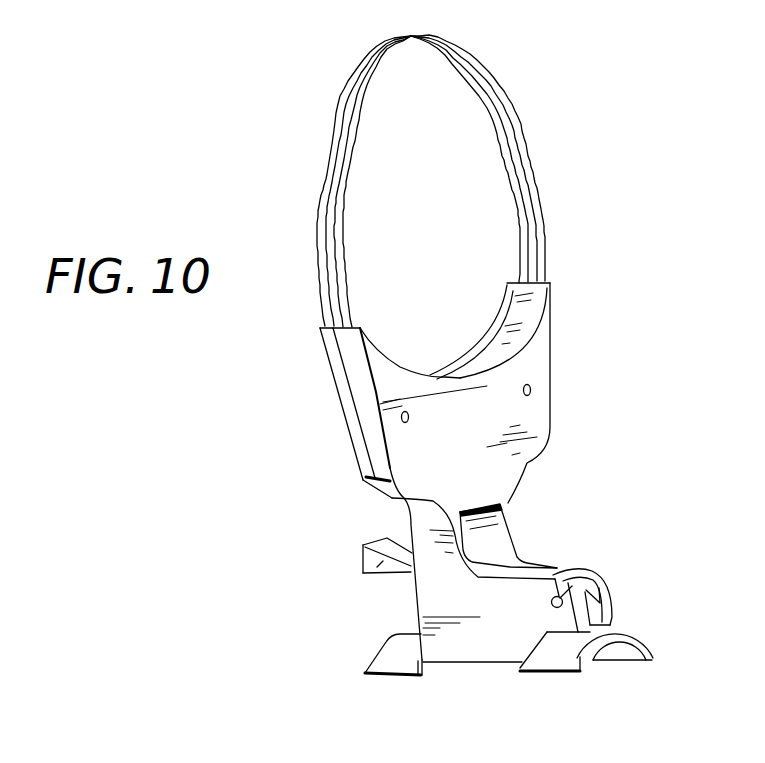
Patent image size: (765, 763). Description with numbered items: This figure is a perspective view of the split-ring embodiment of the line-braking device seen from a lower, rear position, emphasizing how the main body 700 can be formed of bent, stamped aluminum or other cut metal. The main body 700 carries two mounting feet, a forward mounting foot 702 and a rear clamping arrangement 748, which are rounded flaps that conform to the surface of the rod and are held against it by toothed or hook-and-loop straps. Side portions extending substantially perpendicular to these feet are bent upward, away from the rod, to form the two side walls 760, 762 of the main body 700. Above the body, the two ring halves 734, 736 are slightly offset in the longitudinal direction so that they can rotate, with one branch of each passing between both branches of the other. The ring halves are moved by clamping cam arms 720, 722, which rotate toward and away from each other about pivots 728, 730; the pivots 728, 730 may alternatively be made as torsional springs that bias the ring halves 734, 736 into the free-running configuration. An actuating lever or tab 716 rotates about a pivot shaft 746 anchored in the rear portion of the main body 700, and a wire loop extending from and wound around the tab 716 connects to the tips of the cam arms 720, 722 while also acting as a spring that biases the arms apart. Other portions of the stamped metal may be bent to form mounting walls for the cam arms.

The main body 700 is at (456, 377).
The mounting foot 702 is at (393, 647).
The actuating lever or tab 716 is at (378, 571).
The clamping cam arm 720 is at (517, 318).
The clamping cam arm 722 is at (357, 380).
The pivot 728 is at (534, 389).
The pivot 730 is at (400, 417).
The ring half 734 is at (401, 181).
The ring half 736 is at (320, 176).
The pivot shaft 746 is at (588, 568).
The rear clamping arrangement 748 is at (627, 633).
The side wall 760 is at (453, 598).
The side wall 762 is at (510, 530).